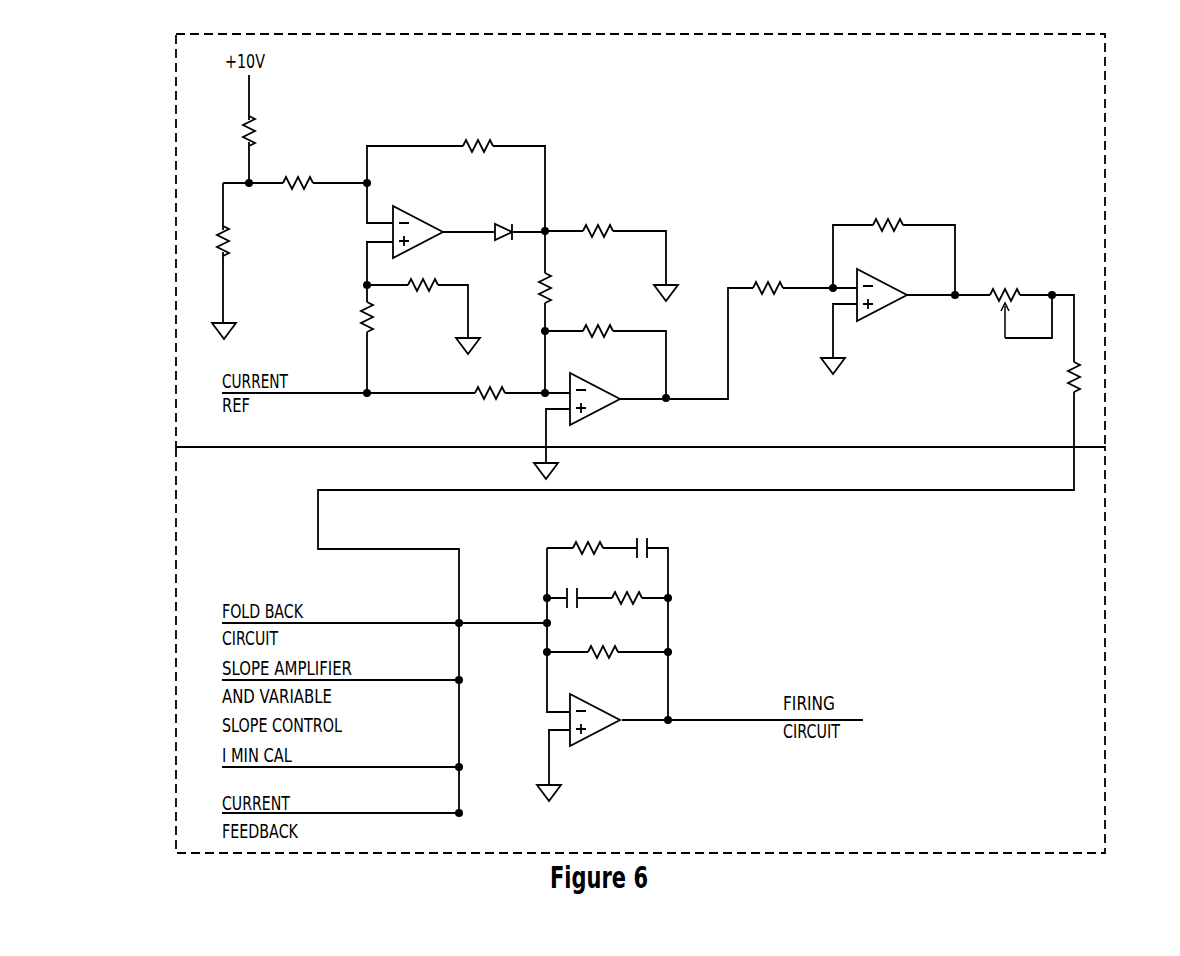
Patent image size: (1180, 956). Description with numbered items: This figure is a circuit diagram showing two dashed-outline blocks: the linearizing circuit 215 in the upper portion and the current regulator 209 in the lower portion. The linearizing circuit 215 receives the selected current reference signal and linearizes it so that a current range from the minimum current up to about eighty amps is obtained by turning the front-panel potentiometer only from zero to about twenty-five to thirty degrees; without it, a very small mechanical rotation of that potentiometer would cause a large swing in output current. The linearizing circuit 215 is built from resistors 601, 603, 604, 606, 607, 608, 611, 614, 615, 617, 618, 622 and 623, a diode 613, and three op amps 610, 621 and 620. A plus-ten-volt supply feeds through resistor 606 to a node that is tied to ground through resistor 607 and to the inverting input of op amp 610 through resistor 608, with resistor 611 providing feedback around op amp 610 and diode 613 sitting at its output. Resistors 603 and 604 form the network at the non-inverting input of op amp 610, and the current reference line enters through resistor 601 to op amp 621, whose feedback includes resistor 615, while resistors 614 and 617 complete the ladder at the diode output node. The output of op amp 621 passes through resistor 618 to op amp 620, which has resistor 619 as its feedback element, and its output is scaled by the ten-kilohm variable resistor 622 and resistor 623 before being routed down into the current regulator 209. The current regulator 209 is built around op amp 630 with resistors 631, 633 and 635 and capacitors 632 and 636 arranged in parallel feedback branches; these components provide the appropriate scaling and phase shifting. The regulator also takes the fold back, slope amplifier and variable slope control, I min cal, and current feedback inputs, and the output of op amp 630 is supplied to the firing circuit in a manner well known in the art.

The linearizing circuit 215 is at (1106, 264).
The current regulator 209 is at (1106, 628).
The resistor 601 is at (492, 388).
The resistor 603 is at (364, 312).
The resistor 604 is at (425, 292).
The resistor 606 is at (252, 127).
The resistor 607 is at (228, 240).
The resistor 608 is at (301, 178).
The op amp 610 is at (432, 223).
The resistor 611 is at (480, 142).
The diode 613 is at (506, 221).
The resistor 614 is at (552, 283).
The resistor 615 is at (604, 326).
The resistor 617 is at (604, 226).
The resistor 618 is at (784, 277).
The resistor 619 is at (905, 213).
The op amp 620 is at (897, 288).
The op amp 621 is at (608, 394).
The variable resistor 622 is at (1008, 290).
The resistor 623 is at (1073, 390).
The op amp 630 is at (608, 716).
The resistor 631 is at (605, 650).
The capacitor 632 is at (586, 596).
The resistor 633 is at (632, 596).
The resistor 635 is at (590, 543).
The capacitor 636 is at (644, 542).